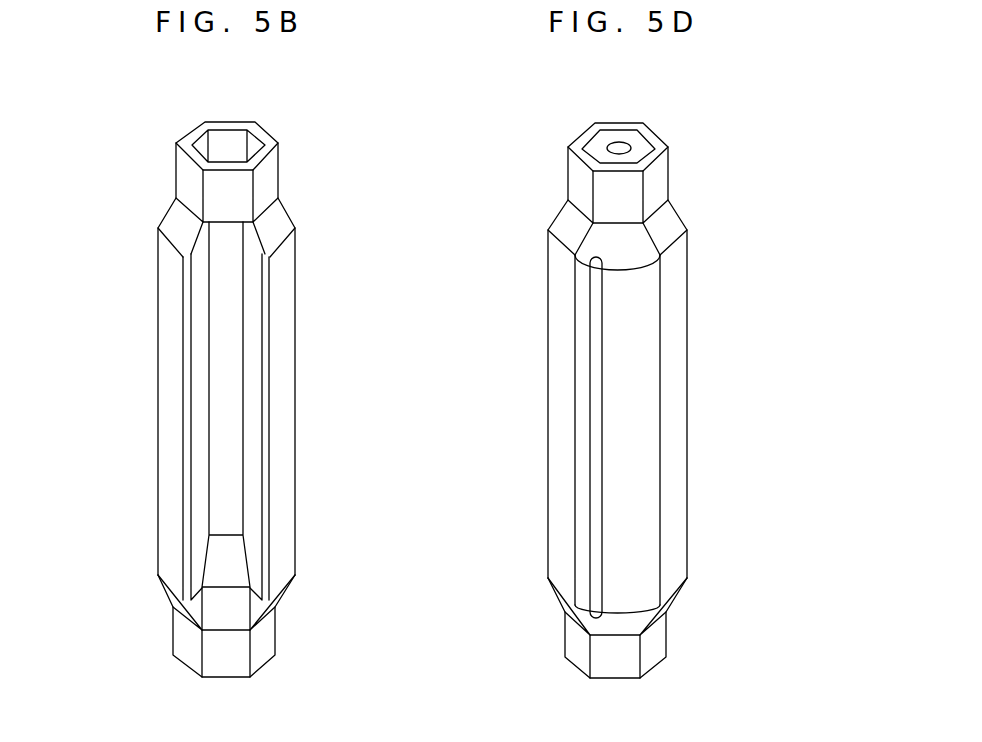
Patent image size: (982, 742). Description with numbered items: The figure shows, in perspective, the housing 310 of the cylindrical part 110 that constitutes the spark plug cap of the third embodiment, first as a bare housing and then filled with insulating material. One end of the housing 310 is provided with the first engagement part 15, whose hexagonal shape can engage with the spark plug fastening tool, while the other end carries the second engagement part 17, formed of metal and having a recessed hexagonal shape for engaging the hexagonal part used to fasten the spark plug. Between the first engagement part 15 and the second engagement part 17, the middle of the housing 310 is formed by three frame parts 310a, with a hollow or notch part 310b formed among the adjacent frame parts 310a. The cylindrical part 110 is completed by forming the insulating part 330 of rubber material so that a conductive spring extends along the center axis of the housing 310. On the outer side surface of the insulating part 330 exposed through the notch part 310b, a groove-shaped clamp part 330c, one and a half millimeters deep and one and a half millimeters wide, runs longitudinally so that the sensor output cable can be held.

In FIG. 5B, the housing 310 is at (237, 366).
In FIG. 5B, the frame part 310a is at (228, 290).
In FIG. 5D, the frame part 310a is at (668, 317).
In FIG. 5B, the notch part 310b is at (248, 460).
In FIG. 5B, the first engagement part 15 is at (277, 170).
In FIG. 5D, the first engagement part 15 is at (567, 182).
In FIG. 5B, the second engagement part 17 is at (277, 628).
In FIG. 5D, the second engagement part 17 is at (565, 632).
In FIG. 5D, the insulating part 330 is at (623, 338).
In FIG. 5D, the clamp part 330c is at (595, 470).
In FIG. 5D, the cylindrical part 110 is at (623, 358).